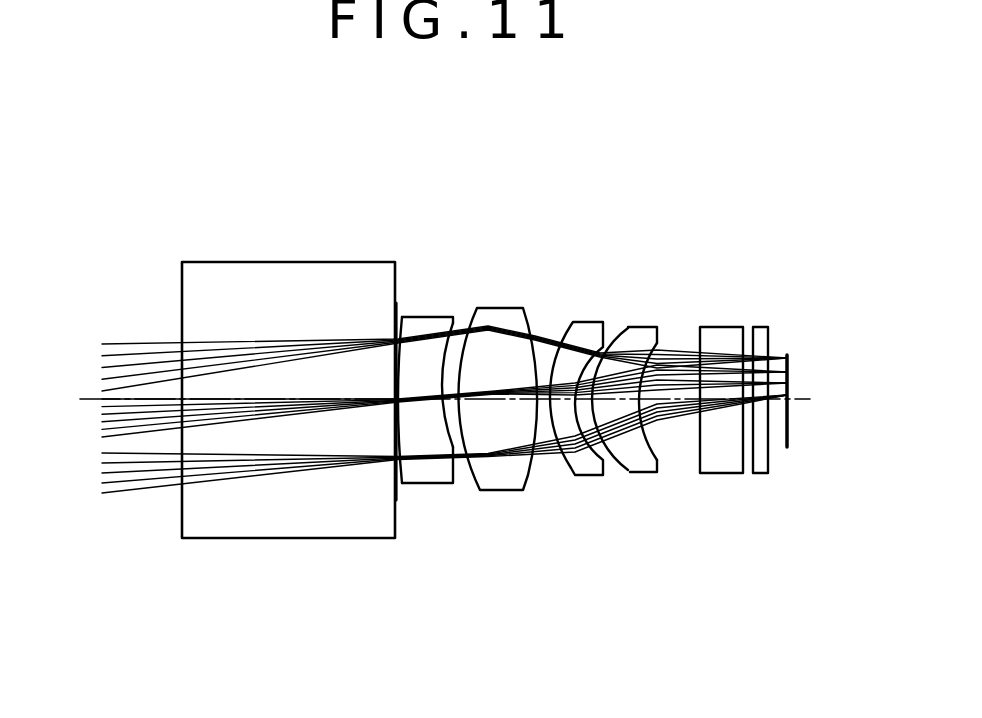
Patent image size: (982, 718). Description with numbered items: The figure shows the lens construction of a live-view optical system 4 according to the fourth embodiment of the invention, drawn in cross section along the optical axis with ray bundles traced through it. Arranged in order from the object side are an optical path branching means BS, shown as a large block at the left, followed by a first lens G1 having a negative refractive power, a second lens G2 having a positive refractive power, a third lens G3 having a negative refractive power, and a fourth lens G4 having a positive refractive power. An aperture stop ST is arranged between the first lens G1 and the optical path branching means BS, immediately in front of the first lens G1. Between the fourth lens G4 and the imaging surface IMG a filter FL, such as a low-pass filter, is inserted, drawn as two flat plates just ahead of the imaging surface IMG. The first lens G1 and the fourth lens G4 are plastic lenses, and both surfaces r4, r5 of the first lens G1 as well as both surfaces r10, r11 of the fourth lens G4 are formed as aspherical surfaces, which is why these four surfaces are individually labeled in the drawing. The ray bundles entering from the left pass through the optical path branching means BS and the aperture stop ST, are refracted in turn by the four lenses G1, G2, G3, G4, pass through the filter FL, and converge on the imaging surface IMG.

The live-view optical system 4 is at (632, 200).
The optical path branching means BS is at (240, 282).
The aperture stop ST is at (397, 313).
The first lens G1 is at (426, 413).
The second lens G2 is at (497, 320).
The third lens G3 is at (590, 322).
The fourth lens G4 is at (638, 413).
The filter FL is at (760, 335).
The imaging surface IMG is at (787, 445).
The surface of the first lens r4 is at (400, 432).
The surface of the first lens r5 is at (452, 426).
The surface of the fourth lens r10 is at (617, 462).
The surface of the fourth lens r11 is at (658, 441).